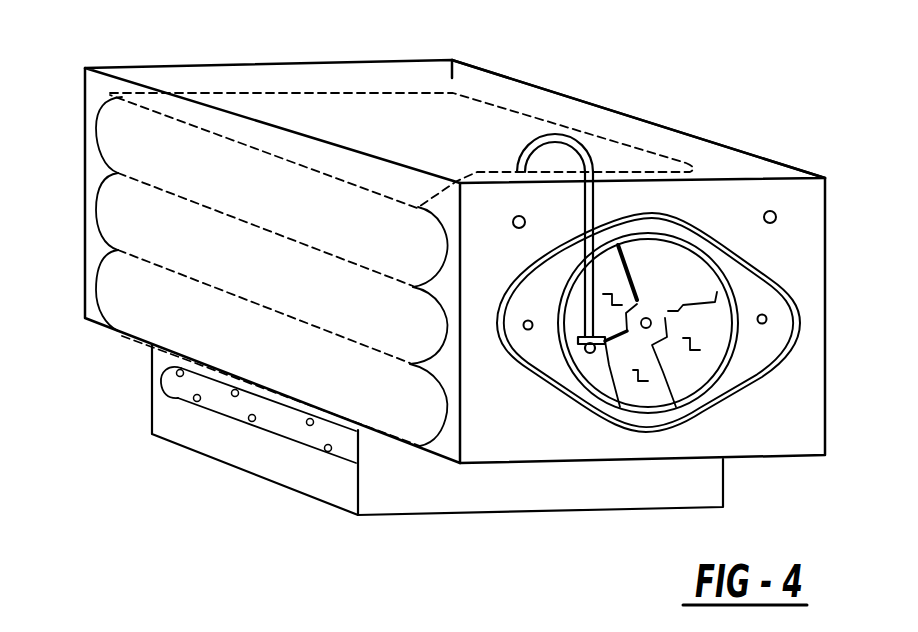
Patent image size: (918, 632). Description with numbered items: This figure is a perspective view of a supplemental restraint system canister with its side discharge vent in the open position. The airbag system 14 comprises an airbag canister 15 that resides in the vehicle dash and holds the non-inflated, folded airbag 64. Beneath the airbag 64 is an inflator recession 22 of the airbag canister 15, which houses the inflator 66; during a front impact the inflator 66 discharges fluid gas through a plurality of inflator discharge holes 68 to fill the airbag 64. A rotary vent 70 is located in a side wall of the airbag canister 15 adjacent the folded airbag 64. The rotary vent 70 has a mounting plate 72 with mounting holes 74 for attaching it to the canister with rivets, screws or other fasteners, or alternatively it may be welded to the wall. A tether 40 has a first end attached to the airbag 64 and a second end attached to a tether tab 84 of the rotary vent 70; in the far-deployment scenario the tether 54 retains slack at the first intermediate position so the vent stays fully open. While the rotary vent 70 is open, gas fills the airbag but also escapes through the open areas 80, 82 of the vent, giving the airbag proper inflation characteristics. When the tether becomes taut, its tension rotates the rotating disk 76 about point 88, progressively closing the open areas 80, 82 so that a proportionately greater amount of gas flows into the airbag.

The airbag system 14 is at (121, 46).
The airbag canister 15 is at (703, 140).
The inflator recession 22 is at (213, 460).
The tether 40 is at (619, 201).
The tether 54 is at (594, 154).
The airbag 64 is at (97, 133).
The inflator 66 is at (176, 396).
The inflator discharge holes 68 is at (165, 373).
The rotary vent 70 is at (852, 193).
The mounting plate 72 is at (745, 257).
The mounting holes 74 is at (766, 321).
The rotating disk 76 is at (643, 381).
The open area 80 is at (698, 340).
The open area 82 is at (640, 244).
The tether tab 84 is at (600, 344).
The point 88 is at (655, 314).